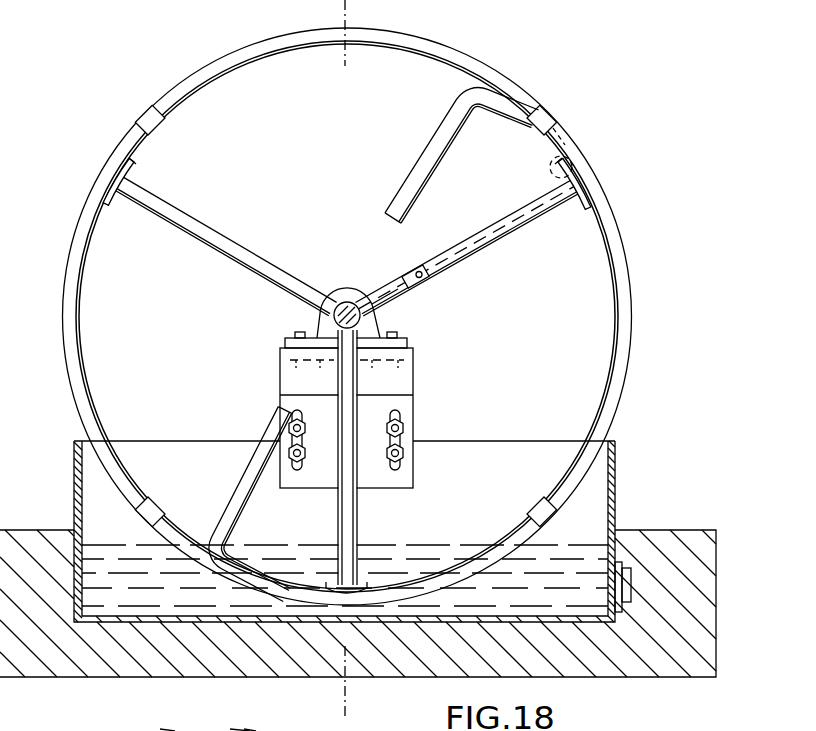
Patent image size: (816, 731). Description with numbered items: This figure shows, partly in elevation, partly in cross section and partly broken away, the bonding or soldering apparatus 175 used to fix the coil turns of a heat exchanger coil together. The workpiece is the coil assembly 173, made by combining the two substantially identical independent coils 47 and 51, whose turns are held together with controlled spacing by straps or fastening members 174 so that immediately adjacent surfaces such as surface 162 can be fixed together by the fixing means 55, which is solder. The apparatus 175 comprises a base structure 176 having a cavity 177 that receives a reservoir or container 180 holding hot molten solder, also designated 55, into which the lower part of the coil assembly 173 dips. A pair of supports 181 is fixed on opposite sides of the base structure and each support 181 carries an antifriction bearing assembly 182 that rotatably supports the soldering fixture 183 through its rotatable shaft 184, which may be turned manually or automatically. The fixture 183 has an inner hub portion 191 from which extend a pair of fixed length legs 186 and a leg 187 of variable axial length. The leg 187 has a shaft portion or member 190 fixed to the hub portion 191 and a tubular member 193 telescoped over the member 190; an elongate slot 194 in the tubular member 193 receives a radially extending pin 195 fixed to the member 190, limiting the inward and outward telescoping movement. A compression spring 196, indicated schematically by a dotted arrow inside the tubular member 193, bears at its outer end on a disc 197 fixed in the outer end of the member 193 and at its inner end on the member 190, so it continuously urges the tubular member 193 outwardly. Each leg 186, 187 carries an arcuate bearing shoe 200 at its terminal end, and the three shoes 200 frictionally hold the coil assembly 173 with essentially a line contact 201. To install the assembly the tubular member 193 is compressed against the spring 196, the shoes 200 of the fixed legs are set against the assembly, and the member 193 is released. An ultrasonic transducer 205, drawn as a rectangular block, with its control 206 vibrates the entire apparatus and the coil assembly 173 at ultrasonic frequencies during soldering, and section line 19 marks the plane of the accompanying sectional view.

The section line 19- 19 is at (324, 10).
The coil 47 is at (163, 726).
The coil 51 is at (248, 730).
The fixing means 55 is at (147, 612).
The immediately adjacent surface 162 is at (242, 728).
The coil assembly 173 is at (632, 364).
The straps or fastening members 174 is at (143, 107).
The bonding or soldering apparatus 175 is at (634, 78).
The base structure 176 is at (708, 538).
The cavity 177 is at (603, 545).
The reservoir or container 180 is at (82, 542).
The support 181 is at (418, 382).
The antifriction bearing assembly 182 is at (305, 322).
The soldering fixture 183 is at (327, 268).
The rotatable shaft 184 is at (318, 305).
The fixed length legs 186 is at (195, 242).
The leg of variable axial length 187 is at (498, 237).
The shaft portion or member 190 is at (396, 283).
The inner hub portion 191 is at (333, 327).
The tubular member 193 is at (533, 190).
The elongate slot 194 is at (435, 267).
The radially extending pin 195 is at (430, 270).
The compression spring 196 is at (503, 213).
The disc 197 is at (568, 143).
The arcuate bearing shoe 200 is at (110, 192).
The line contact 201 is at (115, 180).
The ultrasonic transducer 205 is at (621, 563).
The control 206 is at (631, 583).